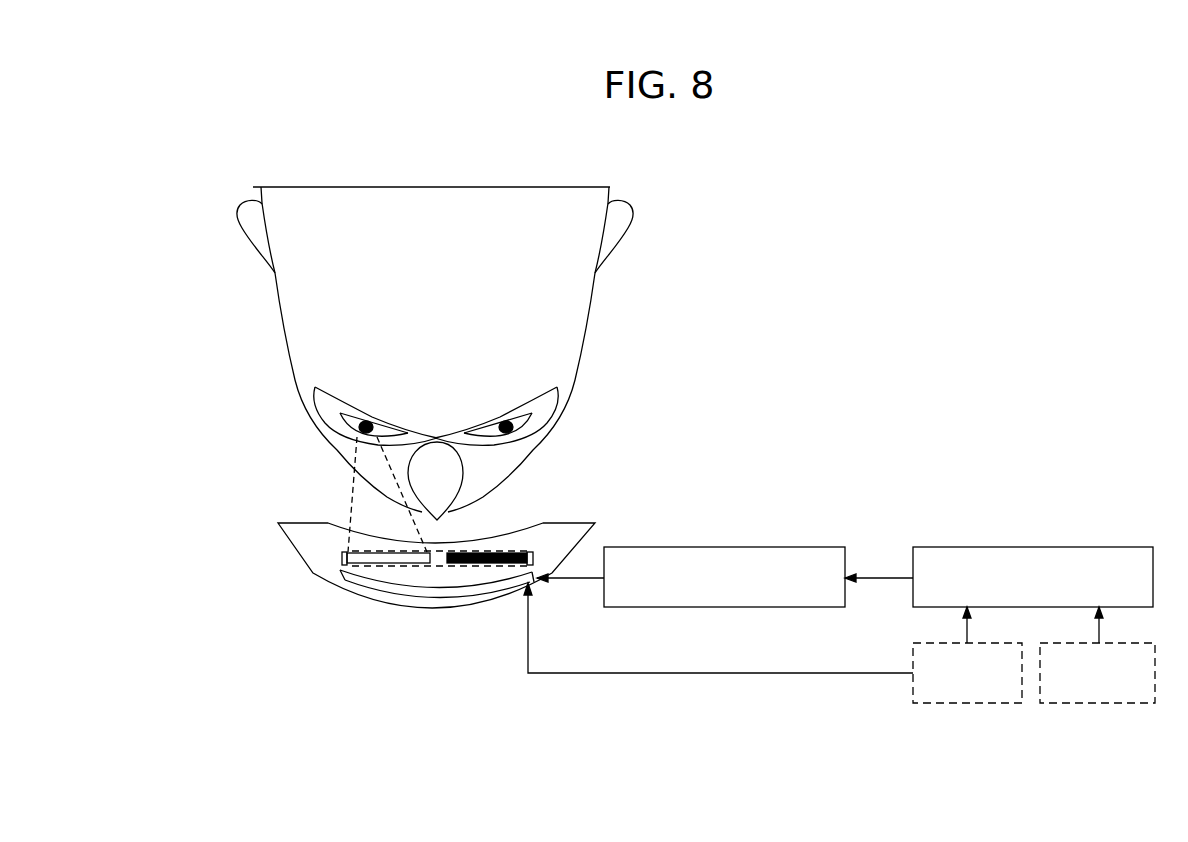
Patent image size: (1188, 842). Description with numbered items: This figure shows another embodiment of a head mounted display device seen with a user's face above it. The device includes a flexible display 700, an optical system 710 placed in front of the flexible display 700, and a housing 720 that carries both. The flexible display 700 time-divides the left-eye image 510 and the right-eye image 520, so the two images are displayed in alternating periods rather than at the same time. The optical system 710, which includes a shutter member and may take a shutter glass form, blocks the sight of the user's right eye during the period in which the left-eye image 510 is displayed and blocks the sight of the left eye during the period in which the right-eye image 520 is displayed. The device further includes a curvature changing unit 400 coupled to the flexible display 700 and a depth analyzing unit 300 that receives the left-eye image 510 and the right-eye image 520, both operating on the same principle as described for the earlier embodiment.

The depth analyzing unit 300 is at (1020, 547).
The curvature changing unit 400 is at (712, 547).
The left-eye image 510 is at (1098, 705).
The right-eye image 520 is at (967, 705).
The flexible display 700 is at (365, 593).
The optical system 710 is at (338, 567).
The housing 720 is at (570, 523).